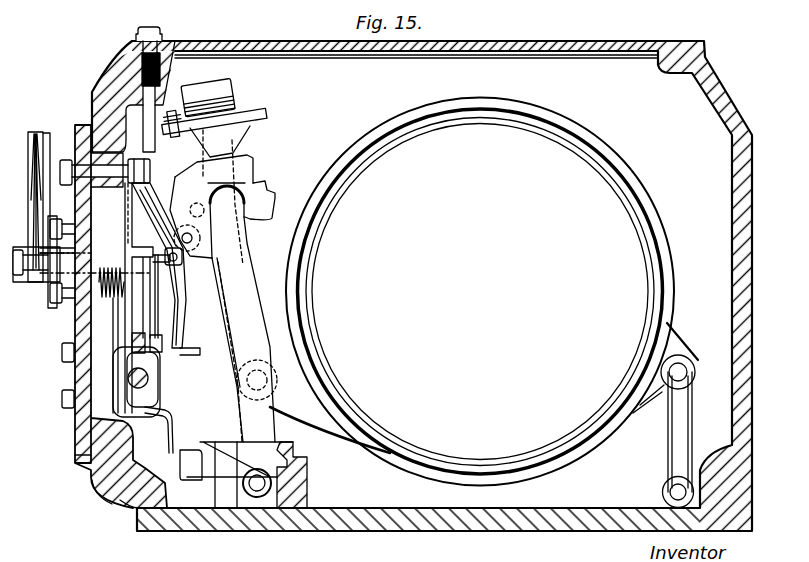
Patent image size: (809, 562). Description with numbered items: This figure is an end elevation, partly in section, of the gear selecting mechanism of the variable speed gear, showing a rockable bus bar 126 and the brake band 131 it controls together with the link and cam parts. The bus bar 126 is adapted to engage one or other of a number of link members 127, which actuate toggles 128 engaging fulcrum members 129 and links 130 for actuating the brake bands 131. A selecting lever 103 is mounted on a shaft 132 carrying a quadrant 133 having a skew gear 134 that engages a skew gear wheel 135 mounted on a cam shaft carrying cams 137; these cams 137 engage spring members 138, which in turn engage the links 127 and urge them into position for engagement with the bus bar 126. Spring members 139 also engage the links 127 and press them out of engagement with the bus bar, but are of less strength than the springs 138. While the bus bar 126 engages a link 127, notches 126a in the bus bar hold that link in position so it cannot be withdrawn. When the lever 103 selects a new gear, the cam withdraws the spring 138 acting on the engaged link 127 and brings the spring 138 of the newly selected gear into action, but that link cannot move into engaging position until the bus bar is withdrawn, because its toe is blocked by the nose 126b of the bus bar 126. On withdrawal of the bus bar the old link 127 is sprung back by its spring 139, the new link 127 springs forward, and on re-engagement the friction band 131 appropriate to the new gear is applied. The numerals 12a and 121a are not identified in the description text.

The lever 103 is at (44, 134).
The supporting bracket 12a is at (620, 520).
The casing wall portion 121a is at (112, 512).
The rockable bus bar 126 is at (270, 498).
The notches 126a is at (205, 440).
The nose 126b is at (160, 482).
The link member 127 is at (150, 418).
The toggle 128 is at (252, 170).
The fulcrum member 129 is at (265, 197).
The link 130 is at (180, 217).
The brake band 131 is at (471, 106).
The shaft 132 is at (105, 256).
The quadrant 133 is at (135, 303).
The skew gear 134 is at (130, 344).
The skew gear wheel 135 is at (74, 465).
The cam 137 is at (166, 385).
The spring member 138 is at (90, 493).
The spring member 139 is at (186, 348).